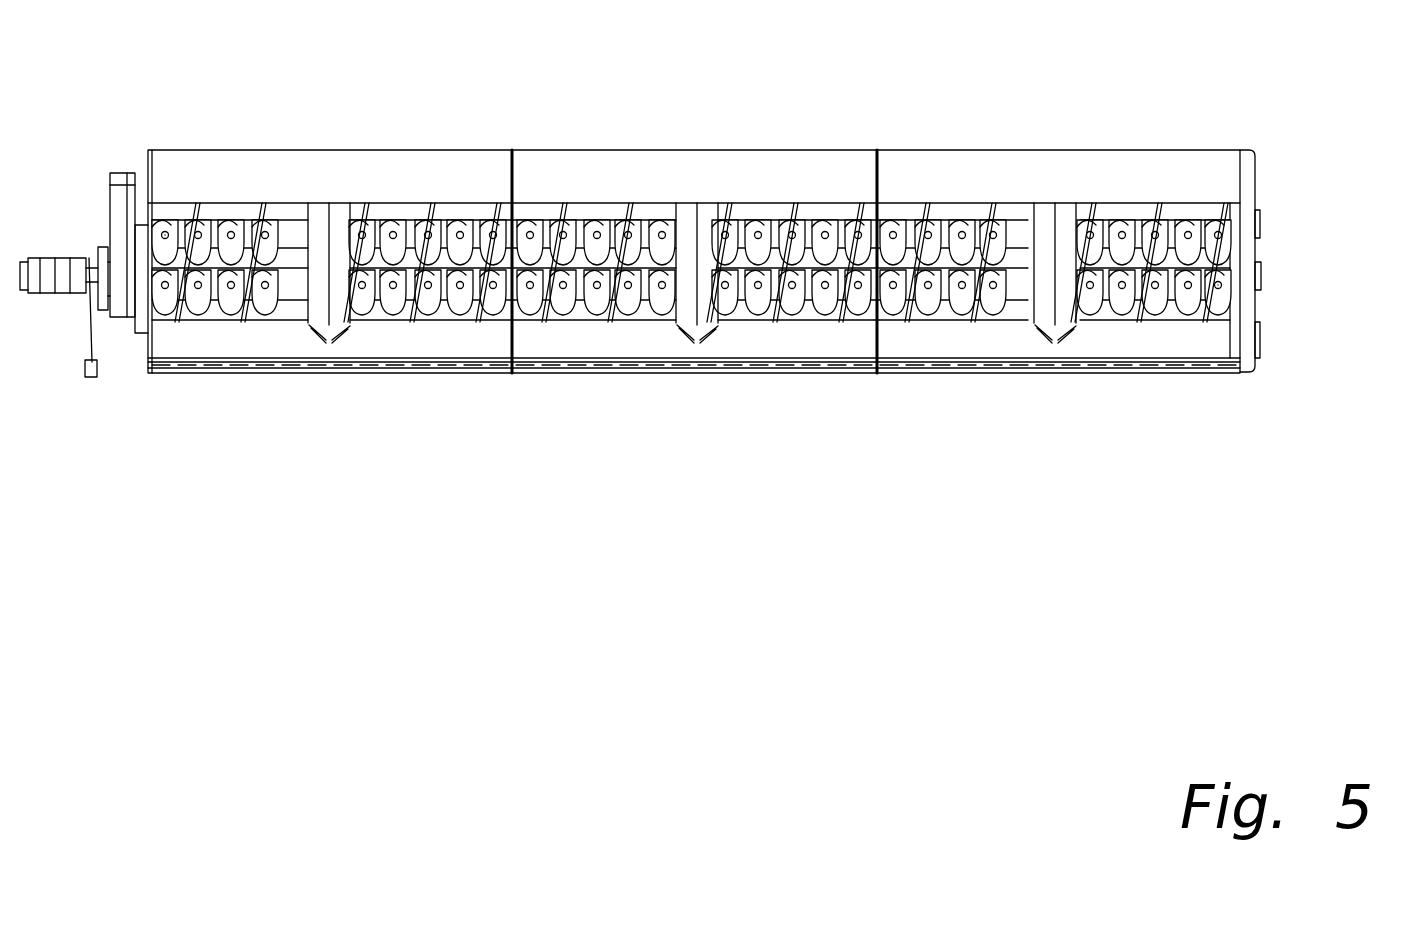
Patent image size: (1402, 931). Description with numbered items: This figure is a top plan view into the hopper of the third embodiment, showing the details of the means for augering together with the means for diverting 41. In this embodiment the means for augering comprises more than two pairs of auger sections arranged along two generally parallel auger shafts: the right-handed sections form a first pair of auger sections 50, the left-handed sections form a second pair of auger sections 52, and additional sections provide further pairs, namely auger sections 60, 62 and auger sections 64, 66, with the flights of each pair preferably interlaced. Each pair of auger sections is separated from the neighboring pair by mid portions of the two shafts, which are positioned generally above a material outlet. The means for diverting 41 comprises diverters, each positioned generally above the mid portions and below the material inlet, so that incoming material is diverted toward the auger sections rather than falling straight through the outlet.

The means for diverting 41 is at (340, 222).
The first pair of auger sections 50 is at (417, 250).
The second pair of auger sections 52 is at (222, 202).
The auger section 60 is at (752, 232).
The auger section 62 is at (833, 313).
The auger section 64 is at (553, 300).
The auger section 66 is at (550, 308).